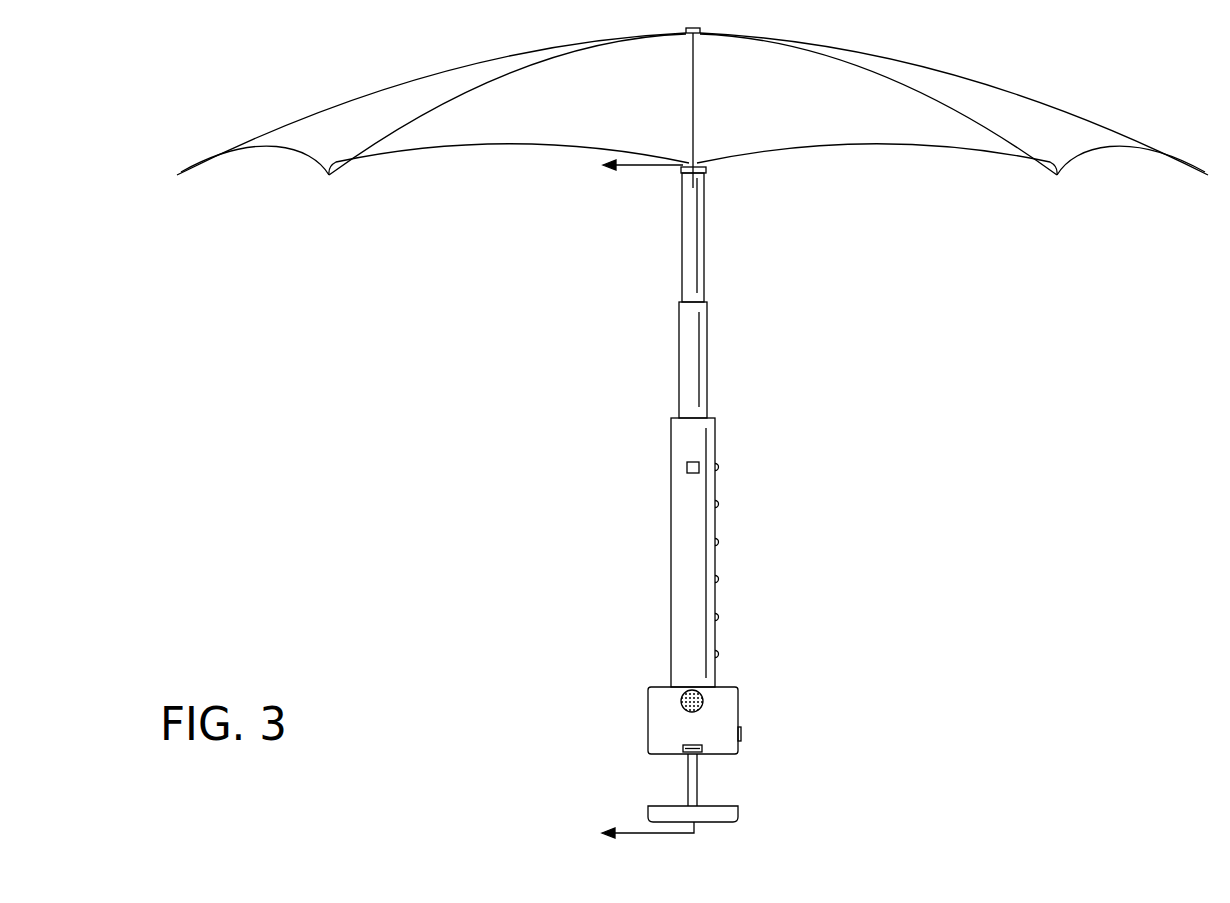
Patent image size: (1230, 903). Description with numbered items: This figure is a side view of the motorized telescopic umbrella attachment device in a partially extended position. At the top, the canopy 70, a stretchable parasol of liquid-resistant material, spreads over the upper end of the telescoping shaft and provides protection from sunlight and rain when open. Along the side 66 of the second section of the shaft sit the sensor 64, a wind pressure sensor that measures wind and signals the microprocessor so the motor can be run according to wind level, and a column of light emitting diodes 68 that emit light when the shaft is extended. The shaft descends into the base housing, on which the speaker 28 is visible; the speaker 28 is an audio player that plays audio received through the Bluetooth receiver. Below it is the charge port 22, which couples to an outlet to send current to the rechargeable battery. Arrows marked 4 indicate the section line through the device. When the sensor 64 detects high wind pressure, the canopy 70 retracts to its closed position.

The canopy 70 is at (1017, 103).
The section line 4- 4 is at (627, 502).
The sensor 64 is at (687, 465).
The side 66 is at (687, 545).
The light emitting diodes 68 is at (717, 465).
The speaker 28 is at (702, 695).
The charge port 22 is at (683, 747).